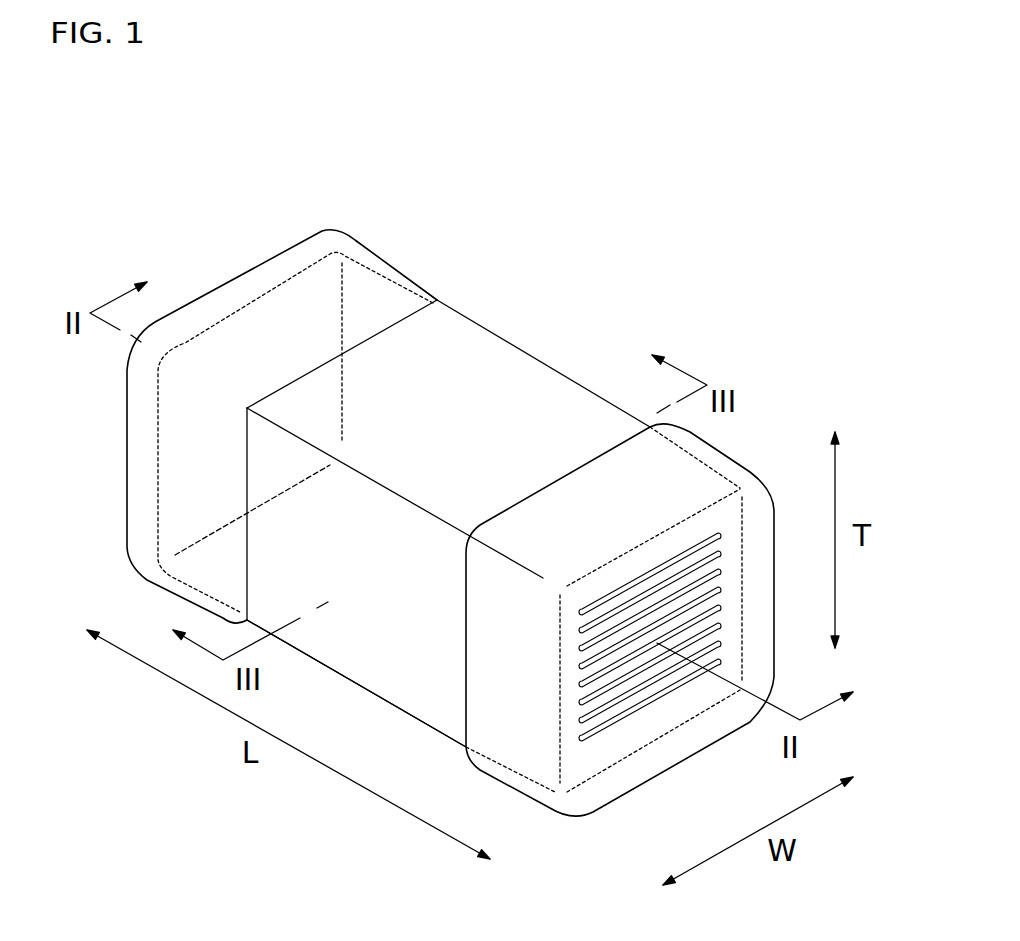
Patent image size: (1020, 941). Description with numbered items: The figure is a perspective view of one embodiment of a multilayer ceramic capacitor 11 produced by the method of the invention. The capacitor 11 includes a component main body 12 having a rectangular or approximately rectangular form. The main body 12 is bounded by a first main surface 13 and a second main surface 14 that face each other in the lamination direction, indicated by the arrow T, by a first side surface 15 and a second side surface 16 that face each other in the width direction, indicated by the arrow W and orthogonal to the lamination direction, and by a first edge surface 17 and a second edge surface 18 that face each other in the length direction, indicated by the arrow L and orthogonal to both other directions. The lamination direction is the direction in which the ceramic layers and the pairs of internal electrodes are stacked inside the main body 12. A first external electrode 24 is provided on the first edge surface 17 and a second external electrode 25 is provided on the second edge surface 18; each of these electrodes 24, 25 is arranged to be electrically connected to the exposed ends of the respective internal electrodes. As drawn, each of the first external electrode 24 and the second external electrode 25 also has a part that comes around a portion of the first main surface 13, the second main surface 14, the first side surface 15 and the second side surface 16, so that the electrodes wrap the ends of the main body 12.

The multilayer ceramic capacitor 11 is at (729, 323).
The component main body 12 is at (497, 367).
The first main surface 13 is at (437, 330).
The second main surface 14 is at (433, 685).
The first side surface 15 is at (357, 628).
The second side surface 16 is at (555, 418).
The first edge surface 17 is at (242, 347).
The second edge surface 18 is at (657, 717).
The first external electrode 24 is at (365, 253).
The second external electrode 25 is at (731, 469).